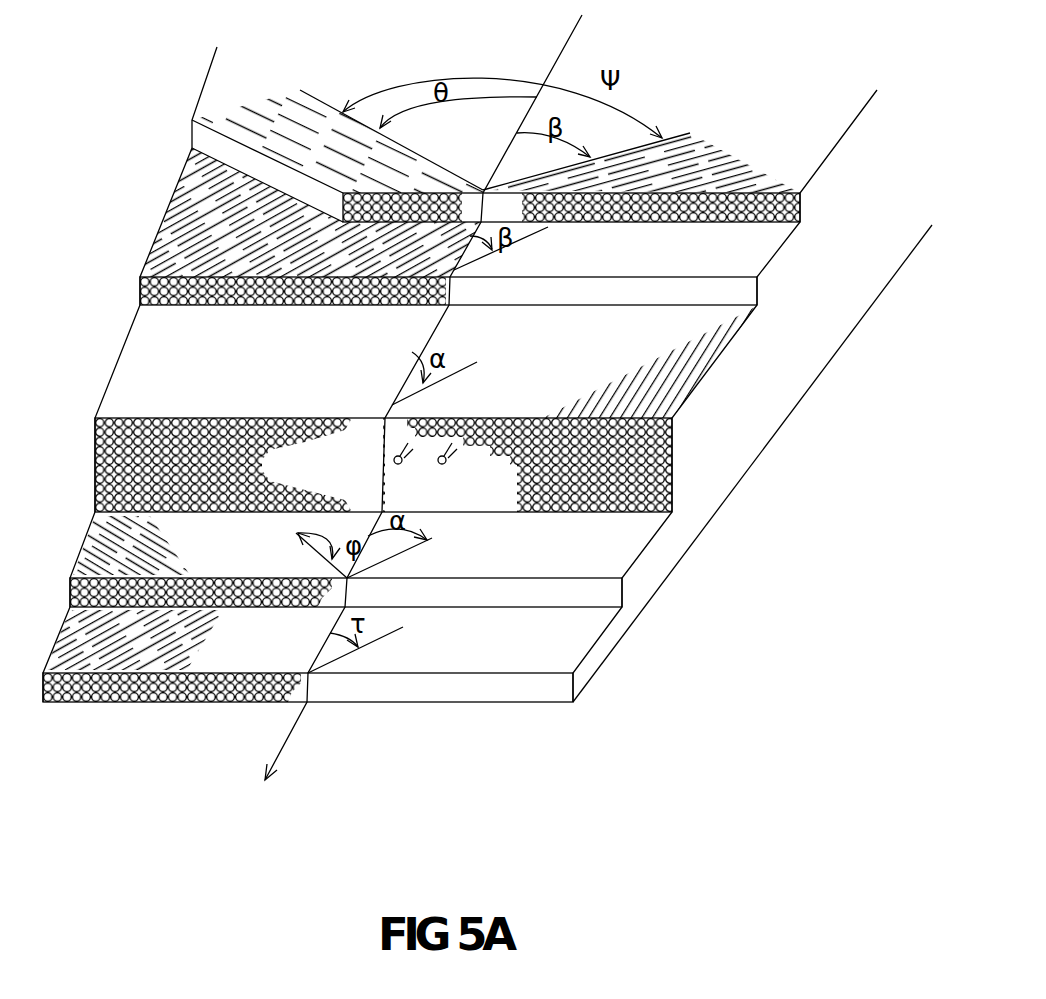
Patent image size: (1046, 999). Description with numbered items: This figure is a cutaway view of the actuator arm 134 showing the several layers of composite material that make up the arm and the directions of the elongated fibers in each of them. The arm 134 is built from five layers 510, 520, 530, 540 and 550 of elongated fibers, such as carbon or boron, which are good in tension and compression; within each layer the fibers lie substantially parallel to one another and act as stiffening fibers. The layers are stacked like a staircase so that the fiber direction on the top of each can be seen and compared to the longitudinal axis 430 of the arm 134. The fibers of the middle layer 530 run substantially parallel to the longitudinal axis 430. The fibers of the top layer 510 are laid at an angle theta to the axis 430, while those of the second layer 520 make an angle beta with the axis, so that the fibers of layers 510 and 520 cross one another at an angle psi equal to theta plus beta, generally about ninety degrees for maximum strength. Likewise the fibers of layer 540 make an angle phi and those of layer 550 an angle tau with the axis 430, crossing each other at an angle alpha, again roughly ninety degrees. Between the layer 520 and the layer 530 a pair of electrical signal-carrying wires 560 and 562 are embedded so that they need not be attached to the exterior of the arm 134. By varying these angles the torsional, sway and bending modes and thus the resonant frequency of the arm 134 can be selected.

The first layer 510 is at (312, 121).
The second layer 520 is at (645, 304).
The middle layer 530 is at (355, 480).
The fourth layer 540 is at (512, 606).
The fifth layer 550 is at (462, 702).
The signal-carrying wire 560 is at (410, 448).
The signal-carrying wire 562 is at (455, 452).
The longitudinal axis 430 is at (569, 40).
The actuator arm 134 is at (711, 521).